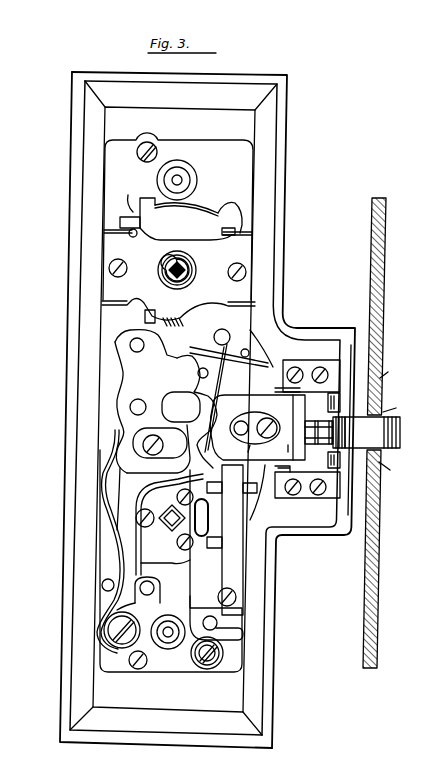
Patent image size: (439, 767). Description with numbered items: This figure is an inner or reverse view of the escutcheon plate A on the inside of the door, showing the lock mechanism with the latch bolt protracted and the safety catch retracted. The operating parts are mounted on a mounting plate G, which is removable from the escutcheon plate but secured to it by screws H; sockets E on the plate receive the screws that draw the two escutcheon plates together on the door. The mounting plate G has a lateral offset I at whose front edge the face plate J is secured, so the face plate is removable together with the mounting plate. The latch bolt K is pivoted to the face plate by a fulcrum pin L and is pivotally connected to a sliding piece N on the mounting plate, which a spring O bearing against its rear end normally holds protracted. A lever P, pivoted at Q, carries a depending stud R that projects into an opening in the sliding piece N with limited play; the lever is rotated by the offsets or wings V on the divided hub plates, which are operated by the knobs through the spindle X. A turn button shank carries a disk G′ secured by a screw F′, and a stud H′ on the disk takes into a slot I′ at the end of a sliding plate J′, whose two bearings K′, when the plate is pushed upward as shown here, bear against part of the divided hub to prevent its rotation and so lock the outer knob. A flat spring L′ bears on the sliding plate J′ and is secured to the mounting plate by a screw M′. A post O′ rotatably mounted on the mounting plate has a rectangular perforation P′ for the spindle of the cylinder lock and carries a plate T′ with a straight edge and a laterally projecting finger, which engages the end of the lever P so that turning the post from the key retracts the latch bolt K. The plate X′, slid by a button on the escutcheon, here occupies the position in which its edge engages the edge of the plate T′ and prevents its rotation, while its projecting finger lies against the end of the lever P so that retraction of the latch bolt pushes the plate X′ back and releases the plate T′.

The escutcheon plate A is at (290, 100).
The mounting plate G is at (244, 163).
The screws H is at (149, 149).
The sockets E is at (183, 176).
The plate X′ is at (232, 198).
The rectangular perforation P′ is at (189, 268).
The post O′ is at (196, 276).
The stud R is at (130, 408).
The lateral offset I is at (262, 380).
The fulcrum pin L is at (356, 378).
The lever P is at (126, 470).
The face plate J is at (338, 525).
The latch bolt K is at (401, 435).
The sliding piece N is at (239, 540).
The bearings K′ is at (245, 545).
The offsets or wings V is at (157, 476).
The spindle X is at (168, 530).
The plate T′ is at (138, 532).
The spring O is at (100, 516).
The flat spring L′ is at (232, 577).
The screw M′ is at (234, 597).
The stud H′ is at (217, 622).
The slot I′ is at (240, 634).
The disk G′ is at (222, 657).
The screw F′ is at (212, 664).
The pivot Q is at (104, 642).
The sliding plate J′ is at (192, 612).